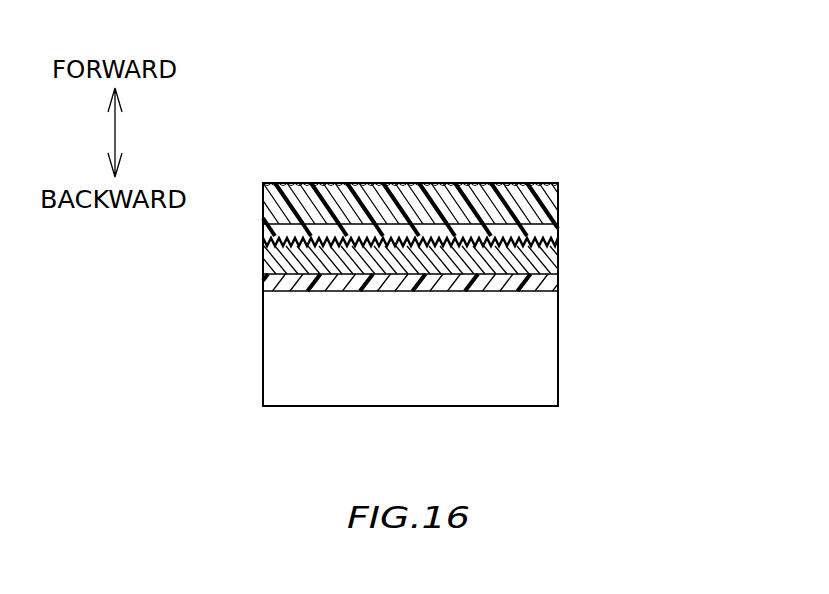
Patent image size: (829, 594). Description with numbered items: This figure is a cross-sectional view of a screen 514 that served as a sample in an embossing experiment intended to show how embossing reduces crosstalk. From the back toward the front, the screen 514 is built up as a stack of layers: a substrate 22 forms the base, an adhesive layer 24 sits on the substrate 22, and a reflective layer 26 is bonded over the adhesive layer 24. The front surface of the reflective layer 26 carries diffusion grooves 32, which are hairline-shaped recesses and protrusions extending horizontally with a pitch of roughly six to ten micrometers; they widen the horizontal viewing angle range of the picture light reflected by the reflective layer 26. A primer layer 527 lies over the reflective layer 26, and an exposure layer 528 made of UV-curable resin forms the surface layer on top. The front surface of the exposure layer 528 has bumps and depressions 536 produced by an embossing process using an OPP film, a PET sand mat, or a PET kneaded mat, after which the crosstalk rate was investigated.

The screen 514 is at (714, 132).
The bumps and depressions 536 is at (259, 195).
The exposure layer 528 is at (560, 197).
The primer layer 527 is at (560, 233).
The diffusion grooves 32 is at (259, 250).
The reflective layer 26 is at (560, 260).
The adhesive layer 24 is at (560, 287).
The substrate 22 is at (560, 340).